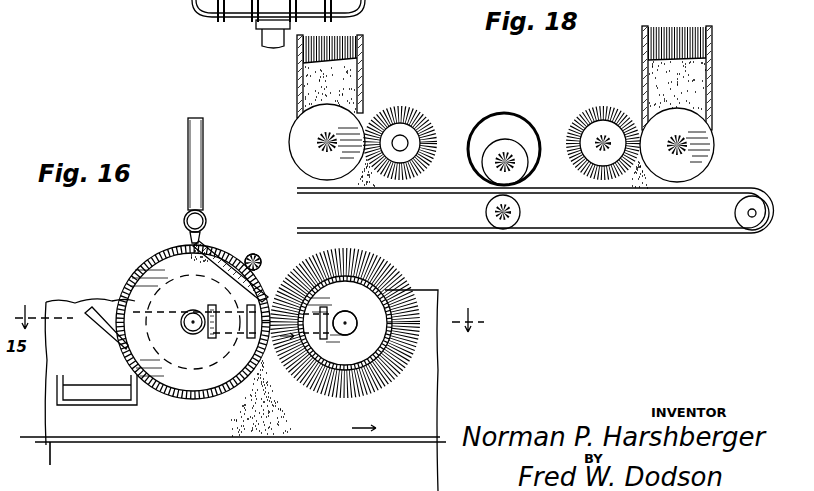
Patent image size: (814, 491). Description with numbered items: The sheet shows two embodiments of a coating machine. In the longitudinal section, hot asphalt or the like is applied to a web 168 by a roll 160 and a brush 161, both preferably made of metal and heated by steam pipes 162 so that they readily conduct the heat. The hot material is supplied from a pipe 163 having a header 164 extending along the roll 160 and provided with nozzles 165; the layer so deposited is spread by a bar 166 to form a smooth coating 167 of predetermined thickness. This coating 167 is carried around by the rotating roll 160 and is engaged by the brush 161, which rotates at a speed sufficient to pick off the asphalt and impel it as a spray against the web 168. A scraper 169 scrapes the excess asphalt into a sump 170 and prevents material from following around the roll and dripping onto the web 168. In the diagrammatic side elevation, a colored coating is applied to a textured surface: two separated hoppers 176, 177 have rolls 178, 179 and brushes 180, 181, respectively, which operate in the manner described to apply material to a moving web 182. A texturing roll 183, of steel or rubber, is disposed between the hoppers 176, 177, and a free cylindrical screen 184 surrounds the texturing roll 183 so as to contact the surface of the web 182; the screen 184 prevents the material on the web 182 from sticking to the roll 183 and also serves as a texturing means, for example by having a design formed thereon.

In FIG. 16, the roll 160 is at (172, 258).
In FIG. 16, the brush 161 is at (405, 291).
In FIG. 18, the steam pipes 162 is at (278, 24).
In FIG. 16, the pipe 163 is at (195, 130).
In FIG. 16, the header 164 is at (188, 213).
In FIG. 16, the nozzles 165 is at (202, 240).
In FIG. 16, the bar 166 is at (259, 256).
In FIG. 16, the coating 167 is at (262, 284).
In FIG. 16, the web 168 is at (306, 449).
In FIG. 16, the scraper 169 is at (92, 310).
In FIG. 16, the sump 170 is at (90, 388).
In FIG. 18, the hopper 176 is at (346, 63).
In FIG. 18, the hopper 177 is at (712, 35).
In FIG. 18, the roll 178 is at (299, 126).
In FIG. 18, the roll 179 is at (712, 141).
In FIG. 18, the brush 180 is at (402, 122).
In FIG. 18, the brush 181 is at (598, 116).
In FIG. 18, the web 182 is at (720, 188).
In FIG. 18, the texturing roll 183 is at (497, 146).
In FIG. 18, the cylindrical screen 184 is at (529, 123).